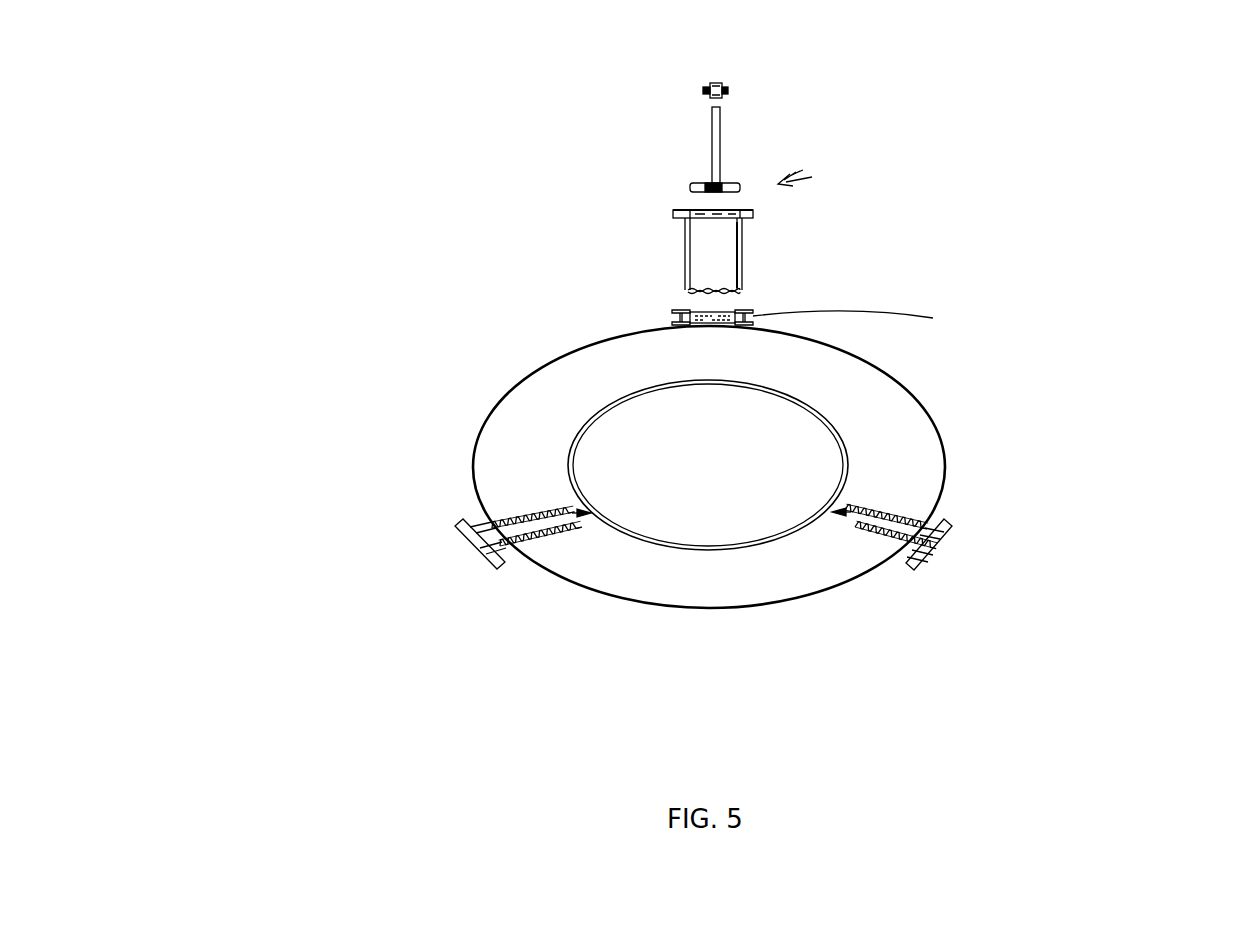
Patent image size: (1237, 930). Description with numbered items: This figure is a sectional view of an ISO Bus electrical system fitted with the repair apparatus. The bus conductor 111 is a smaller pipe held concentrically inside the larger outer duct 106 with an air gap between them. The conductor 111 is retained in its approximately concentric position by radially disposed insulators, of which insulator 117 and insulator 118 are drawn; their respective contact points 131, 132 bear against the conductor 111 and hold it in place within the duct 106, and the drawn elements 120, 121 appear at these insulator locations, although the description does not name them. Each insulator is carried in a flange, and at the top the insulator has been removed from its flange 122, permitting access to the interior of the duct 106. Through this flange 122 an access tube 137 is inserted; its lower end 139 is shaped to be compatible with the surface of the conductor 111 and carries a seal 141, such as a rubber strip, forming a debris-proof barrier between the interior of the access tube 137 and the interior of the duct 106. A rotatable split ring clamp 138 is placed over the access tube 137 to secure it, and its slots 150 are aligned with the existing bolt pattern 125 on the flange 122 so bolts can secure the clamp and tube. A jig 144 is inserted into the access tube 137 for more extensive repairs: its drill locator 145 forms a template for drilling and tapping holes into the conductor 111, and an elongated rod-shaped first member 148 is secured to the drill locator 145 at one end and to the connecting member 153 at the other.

The duct 106 is at (950, 443).
The bus conductor 111 is at (603, 413).
The insulator 117 is at (520, 508).
The insulator 118 is at (873, 547).
The left spring 120 is at (584, 516).
The right spring 121 is at (833, 512).
The flange 122 is at (933, 318).
The bolt pattern 125 is at (673, 312).
The contact point 131 is at (578, 508).
The contact point 132 is at (843, 497).
The access tube 137 is at (743, 242).
The split ring clamp 138 is at (745, 214).
The end of access tube 139 is at (683, 293).
The seal 141 is at (722, 292).
The jig 144 is at (828, 162).
The drill locator 145 is at (690, 185).
The first member 148 is at (720, 137).
The slots 150 is at (673, 210).
The connecting member 153 is at (728, 90).